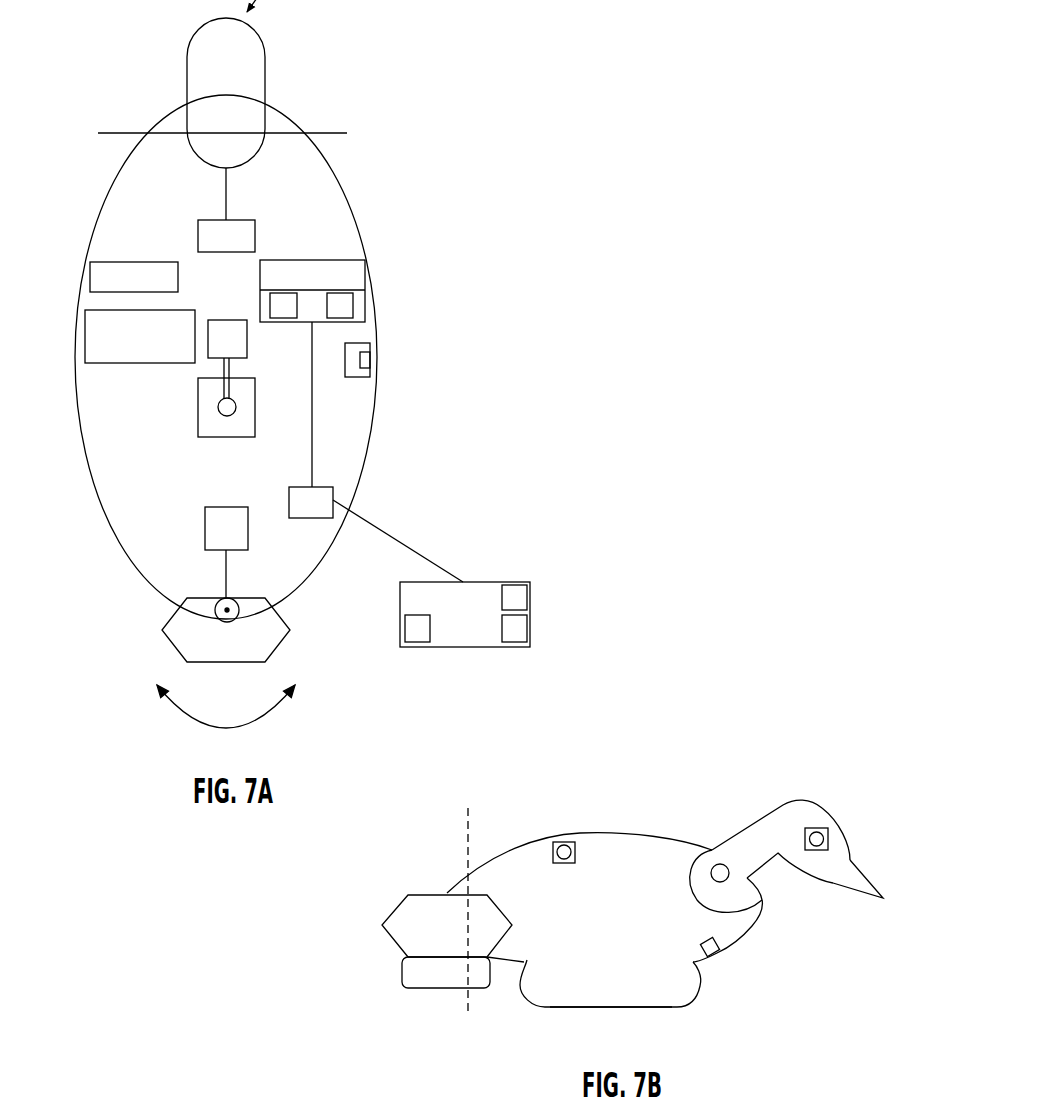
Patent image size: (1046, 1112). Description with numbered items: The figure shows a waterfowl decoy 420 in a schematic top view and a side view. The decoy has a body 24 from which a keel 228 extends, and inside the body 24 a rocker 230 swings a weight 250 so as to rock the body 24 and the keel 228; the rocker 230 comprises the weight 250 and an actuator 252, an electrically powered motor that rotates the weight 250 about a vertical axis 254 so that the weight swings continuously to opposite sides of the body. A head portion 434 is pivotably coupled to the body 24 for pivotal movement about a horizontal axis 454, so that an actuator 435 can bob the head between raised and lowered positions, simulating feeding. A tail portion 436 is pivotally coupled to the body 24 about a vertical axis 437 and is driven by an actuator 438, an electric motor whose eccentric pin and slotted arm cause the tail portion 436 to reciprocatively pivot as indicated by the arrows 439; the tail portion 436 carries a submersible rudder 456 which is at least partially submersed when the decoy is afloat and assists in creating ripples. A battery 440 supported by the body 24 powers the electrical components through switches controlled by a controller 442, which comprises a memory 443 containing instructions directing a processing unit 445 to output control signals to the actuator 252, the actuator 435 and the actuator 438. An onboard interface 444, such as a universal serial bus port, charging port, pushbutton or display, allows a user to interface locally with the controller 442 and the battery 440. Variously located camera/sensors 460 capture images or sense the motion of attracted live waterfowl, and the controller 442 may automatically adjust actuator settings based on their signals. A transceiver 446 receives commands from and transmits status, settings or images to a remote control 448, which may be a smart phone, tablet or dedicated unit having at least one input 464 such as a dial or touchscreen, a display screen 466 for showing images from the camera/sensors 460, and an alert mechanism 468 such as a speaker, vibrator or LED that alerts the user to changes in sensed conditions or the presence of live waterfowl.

In FIG. 7A, the body 24 is at (78, 440).
In FIG. 7B, the body 24 is at (601, 832).
In FIG. 7B, the keel 228 is at (612, 1008).
In FIG. 7A, the rocker 230 is at (195, 371).
In FIG. 7A, the weight 250 is at (219, 320).
In FIG. 7A, the actuator 252 is at (198, 422).
In FIG. 7A, the vertical axis 254 is at (230, 416).
In FIG. 7B, the waterfowl decoy 420 is at (808, 746).
In FIG. 7A, the head portion 434 is at (266, 70).
In FIG. 7B, the head portion 434 is at (817, 815).
In FIG. 7A, the actuator 435 is at (256, 232).
In FIG. 7A, the tail portion 436 is at (284, 640).
In FIG. 7B, the tail portion 436 is at (432, 894).
In FIG. 7A, the vertical axis 437 is at (215, 607).
In FIG. 7B, the vertical axis 437 is at (470, 830).
In FIG. 7A, the actuator 438 is at (205, 525).
In FIG. 7A, the arrows 439 is at (257, 725).
In FIG. 7A, the battery 440 is at (90, 278).
In FIG. 7A, the controller 442 is at (322, 262).
In FIG. 7A, the memory 443 is at (284, 320).
In FIG. 7A, the onboard interface 444 is at (85, 343).
In FIG. 7A, the processing unit 445 is at (355, 302).
In FIG. 7B, the processing unit 445 is at (719, 955).
In FIG. 7A, the transceiver 446 is at (330, 487).
In FIG. 7A, the remote control 448 is at (460, 648).
In FIG. 7A, the horizontal axis 454 is at (111, 133).
In FIG. 7B, the horizontal axis 454 is at (720, 864).
In FIG. 7B, the submersible rudder 456 is at (440, 989).
In FIG. 7A, the camera/sensors 460 is at (355, 343).
In FIG. 7B, the camera/sensors 460 is at (563, 842).
In FIG. 7A, the input 464 is at (528, 628).
In FIG. 7A, the display screen 466 is at (528, 598).
In FIG. 7A, the alert mechanism 468 is at (425, 648).